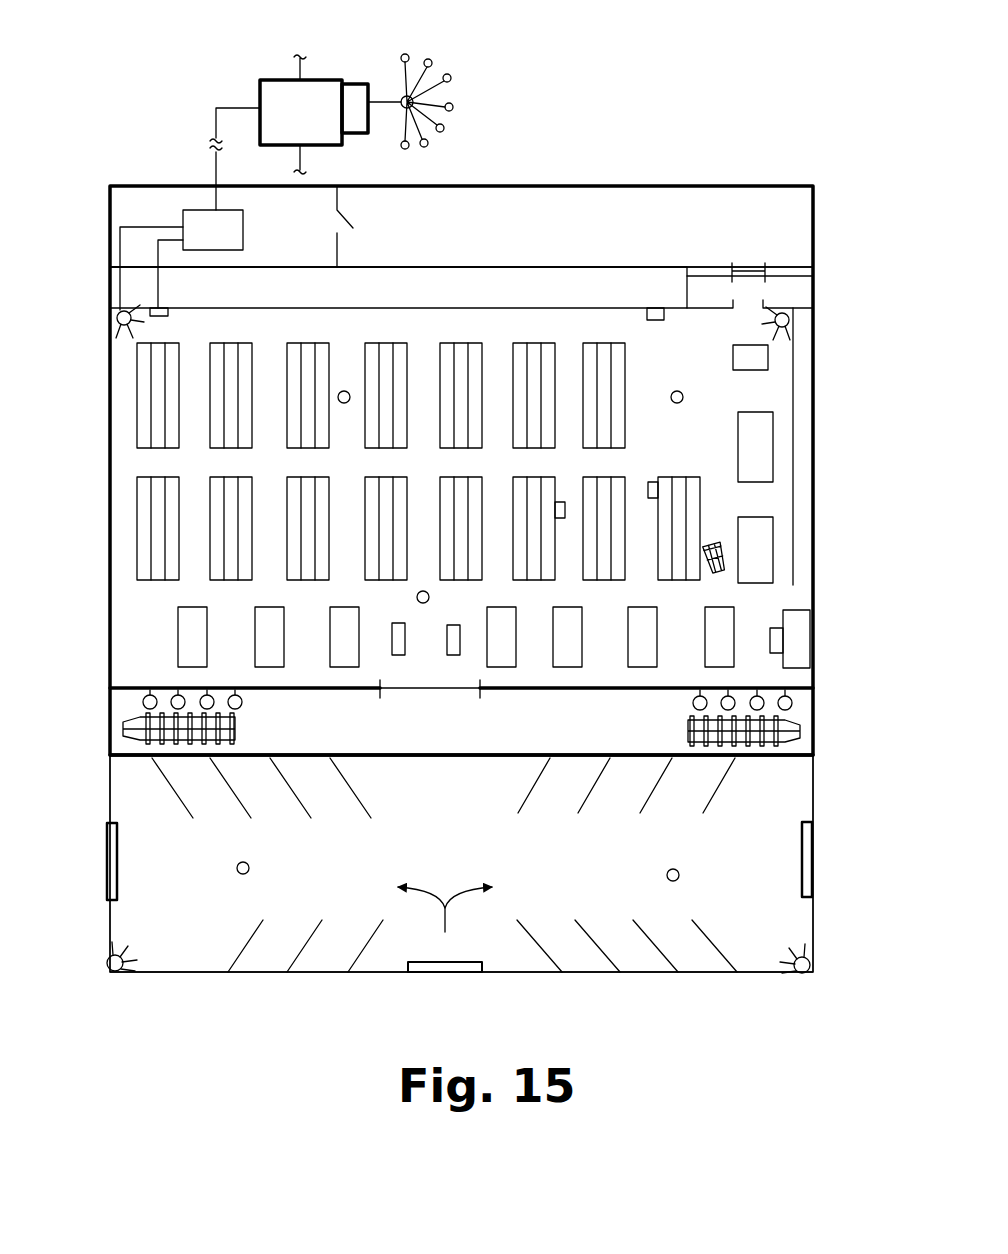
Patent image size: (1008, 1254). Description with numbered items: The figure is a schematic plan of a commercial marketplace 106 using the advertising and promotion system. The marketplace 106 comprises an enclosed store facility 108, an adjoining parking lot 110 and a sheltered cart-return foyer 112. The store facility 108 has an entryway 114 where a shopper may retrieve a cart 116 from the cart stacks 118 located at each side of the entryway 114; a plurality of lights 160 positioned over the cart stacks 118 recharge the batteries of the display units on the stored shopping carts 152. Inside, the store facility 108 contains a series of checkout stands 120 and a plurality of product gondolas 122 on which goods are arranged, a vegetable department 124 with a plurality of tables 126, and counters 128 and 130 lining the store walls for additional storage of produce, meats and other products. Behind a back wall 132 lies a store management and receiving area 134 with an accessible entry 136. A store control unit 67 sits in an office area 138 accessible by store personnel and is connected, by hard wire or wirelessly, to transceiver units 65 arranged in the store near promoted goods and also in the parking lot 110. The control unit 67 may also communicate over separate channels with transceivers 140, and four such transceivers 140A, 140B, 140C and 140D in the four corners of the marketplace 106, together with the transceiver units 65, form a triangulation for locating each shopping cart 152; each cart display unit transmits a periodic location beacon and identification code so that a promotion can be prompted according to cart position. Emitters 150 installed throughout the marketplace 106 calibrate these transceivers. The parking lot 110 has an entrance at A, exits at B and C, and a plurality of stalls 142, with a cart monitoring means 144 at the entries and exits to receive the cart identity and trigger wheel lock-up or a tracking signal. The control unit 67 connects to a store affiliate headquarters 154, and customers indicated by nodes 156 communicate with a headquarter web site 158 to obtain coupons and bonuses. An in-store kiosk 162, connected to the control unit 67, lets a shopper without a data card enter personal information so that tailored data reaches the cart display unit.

The transceiver unit 65 is at (165, 314).
The store control unit 67 is at (190, 207).
The commercial marketplace 106 is at (100, 797).
The enclosed store facility 108 is at (795, 290).
The parking lot 110 is at (796, 805).
The sheltered cart-return foyer 112 is at (802, 750).
The entryway 114 is at (409, 698).
The cart 116 is at (239, 730).
The cart stacks 118 is at (804, 730).
The checkout stands 120 is at (177, 637).
The product gondolas 122 is at (136, 543).
The vegetable department 124 is at (781, 447).
The tables 126 is at (776, 545).
The counter 128 is at (798, 398).
The counter 130 is at (590, 290).
The back wall 132 is at (634, 264).
The store management and receiving area 134 is at (513, 222).
The accessible entry 136 is at (747, 262).
The office area 138 is at (128, 206).
The transceivers 140 is at (90, 306).
The transceiver 140A is at (123, 332).
The transceiver 140B is at (783, 334).
The transceiver 140C is at (106, 960).
The transceiver 140D is at (815, 965).
The stalls 142 is at (596, 933).
The cart monitoring means 144 is at (105, 865).
The emitters 150 is at (345, 389).
The shopping cart 152 is at (720, 542).
The store affiliate headquarters 154 is at (322, 70).
The nodes 156 is at (447, 70).
The headquarter web site 158 is at (355, 147).
The lights 160 is at (249, 703).
The in-store kiosk 162 is at (797, 635).